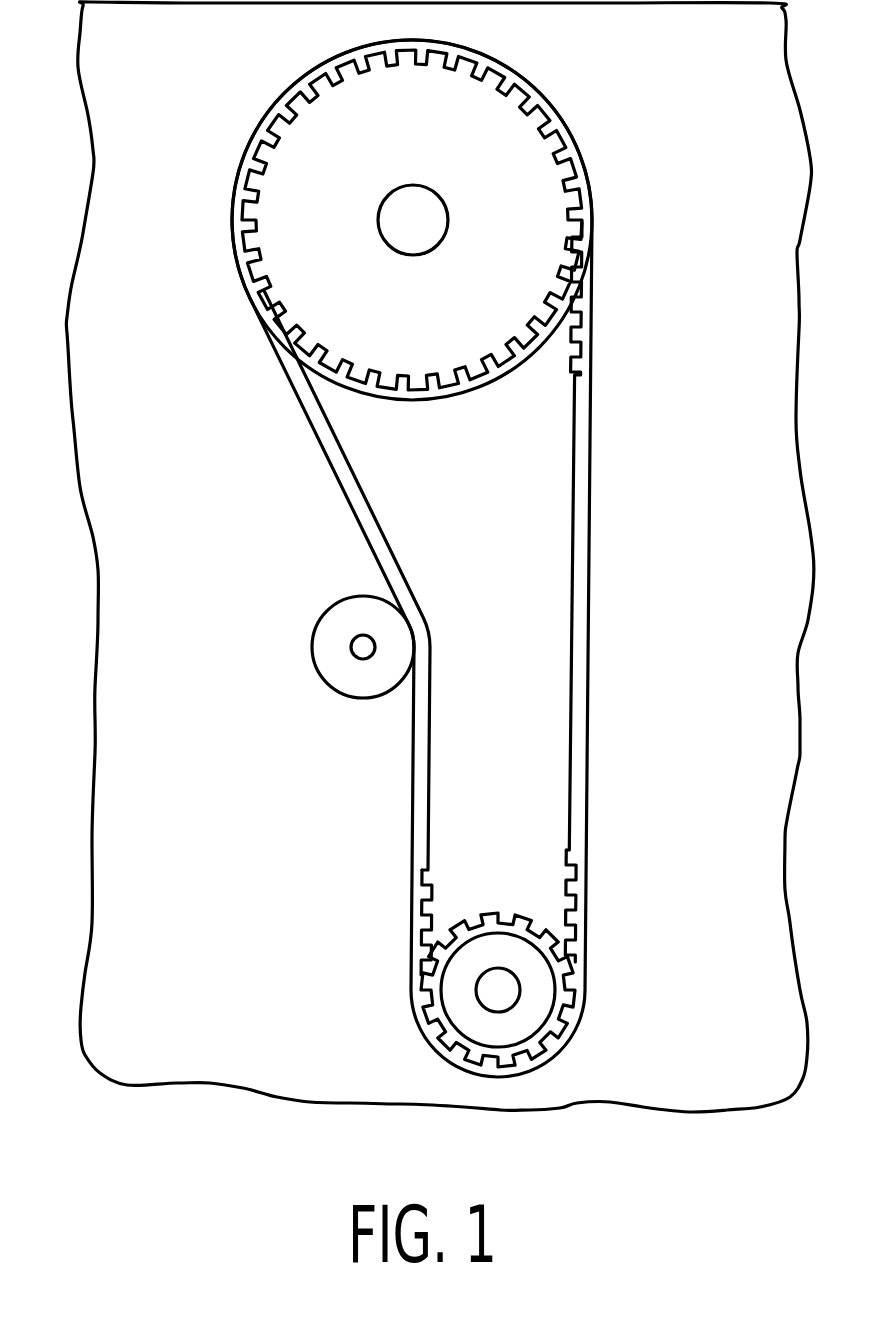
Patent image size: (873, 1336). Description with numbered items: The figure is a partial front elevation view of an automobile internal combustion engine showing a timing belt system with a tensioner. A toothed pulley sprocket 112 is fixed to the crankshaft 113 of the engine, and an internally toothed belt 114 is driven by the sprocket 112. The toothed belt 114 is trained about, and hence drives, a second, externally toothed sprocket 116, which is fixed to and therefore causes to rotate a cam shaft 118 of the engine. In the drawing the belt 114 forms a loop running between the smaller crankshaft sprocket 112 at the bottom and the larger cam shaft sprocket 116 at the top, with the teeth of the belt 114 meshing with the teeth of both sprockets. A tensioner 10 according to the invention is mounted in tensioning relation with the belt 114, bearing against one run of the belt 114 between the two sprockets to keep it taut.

The tensioner 10 is at (317, 698).
The pulley sprocket 112 is at (458, 1000).
The crankshaft 113 is at (507, 992).
The belt 114 is at (578, 745).
The second sprocket 116 is at (540, 209).
The cam shaft 118 is at (407, 231).